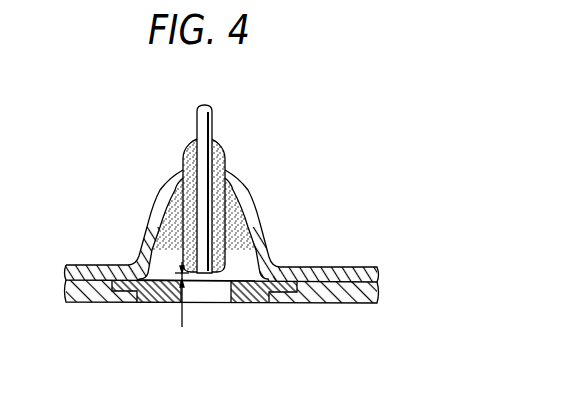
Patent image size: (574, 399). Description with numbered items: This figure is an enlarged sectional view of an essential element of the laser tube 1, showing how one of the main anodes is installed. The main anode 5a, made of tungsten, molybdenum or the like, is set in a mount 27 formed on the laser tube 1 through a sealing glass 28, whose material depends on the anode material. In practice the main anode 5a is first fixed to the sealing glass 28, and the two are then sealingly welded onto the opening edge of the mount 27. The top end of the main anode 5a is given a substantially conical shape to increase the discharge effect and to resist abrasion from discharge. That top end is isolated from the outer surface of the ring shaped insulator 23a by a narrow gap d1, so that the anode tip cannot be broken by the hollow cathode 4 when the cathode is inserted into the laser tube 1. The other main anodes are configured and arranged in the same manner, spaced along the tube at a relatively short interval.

The laser tube 1 is at (355, 267).
The hollow cathode 4 is at (340, 304).
The main anode 5a is at (209, 118).
The ring shaped insulator 23a is at (257, 304).
The mount 27 is at (267, 240).
The sealing glass 28 is at (226, 160).
The narrow gap d1 is at (182, 327).